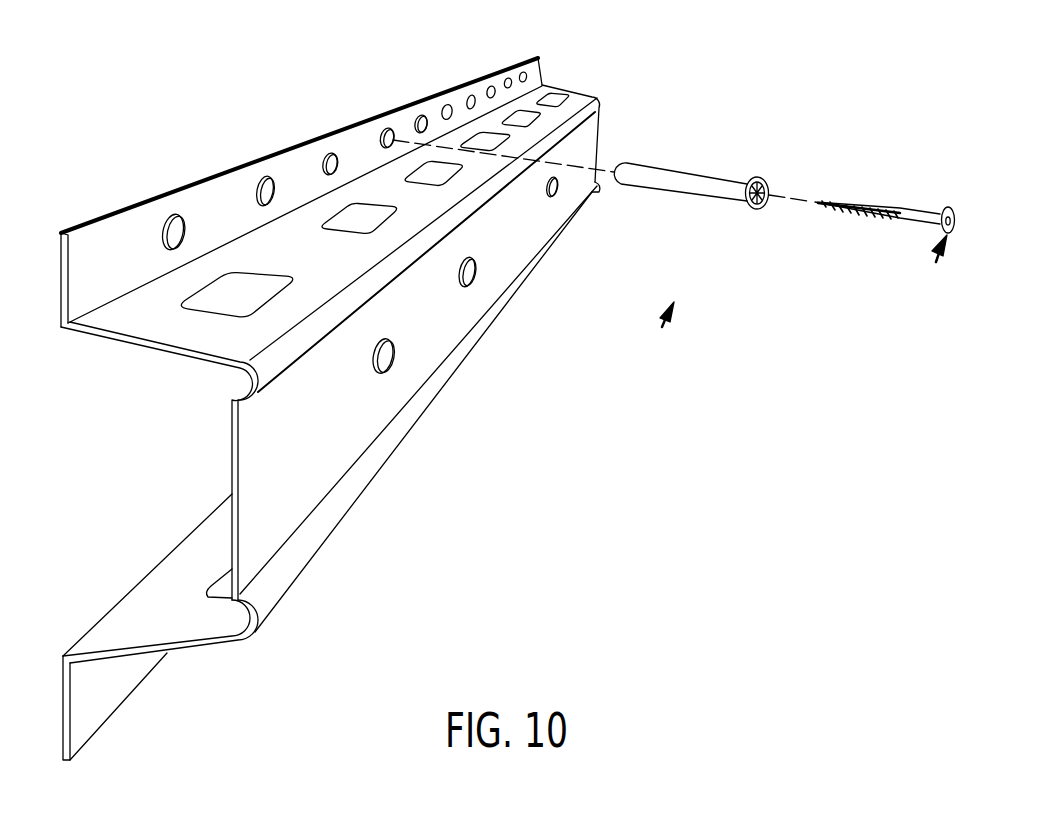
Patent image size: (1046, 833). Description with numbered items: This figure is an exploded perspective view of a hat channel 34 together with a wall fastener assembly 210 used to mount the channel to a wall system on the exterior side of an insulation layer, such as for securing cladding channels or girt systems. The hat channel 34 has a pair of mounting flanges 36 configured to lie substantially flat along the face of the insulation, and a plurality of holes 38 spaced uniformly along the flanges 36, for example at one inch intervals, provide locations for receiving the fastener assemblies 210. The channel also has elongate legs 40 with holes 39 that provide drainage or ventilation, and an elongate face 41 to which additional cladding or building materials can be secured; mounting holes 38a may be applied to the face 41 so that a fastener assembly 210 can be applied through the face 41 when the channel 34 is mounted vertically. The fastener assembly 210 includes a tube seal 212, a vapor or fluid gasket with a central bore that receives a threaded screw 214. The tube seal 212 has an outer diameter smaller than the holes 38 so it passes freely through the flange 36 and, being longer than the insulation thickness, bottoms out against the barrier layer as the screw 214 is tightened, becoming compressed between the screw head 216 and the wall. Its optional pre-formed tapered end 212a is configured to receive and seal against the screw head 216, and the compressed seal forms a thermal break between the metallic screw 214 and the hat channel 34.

The hat channel 34 is at (353, 432).
The mounting flange 36 is at (123, 234).
The holes 38 is at (267, 178).
The mounting holes 38a is at (562, 184).
The holes 39 is at (338, 201).
The elongate legs 40 is at (94, 337).
The elongate face 41 is at (375, 397).
The wall fastener assembly 210 is at (662, 327).
The tube seal 212 is at (685, 185).
The tapered end 212a is at (760, 176).
The screw 214 is at (863, 205).
The screw head 216 is at (937, 262).